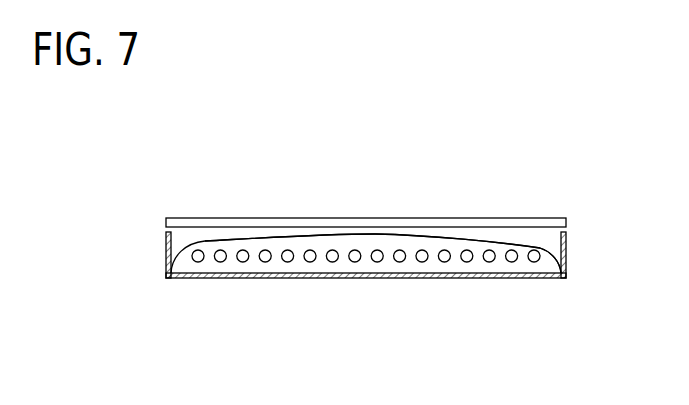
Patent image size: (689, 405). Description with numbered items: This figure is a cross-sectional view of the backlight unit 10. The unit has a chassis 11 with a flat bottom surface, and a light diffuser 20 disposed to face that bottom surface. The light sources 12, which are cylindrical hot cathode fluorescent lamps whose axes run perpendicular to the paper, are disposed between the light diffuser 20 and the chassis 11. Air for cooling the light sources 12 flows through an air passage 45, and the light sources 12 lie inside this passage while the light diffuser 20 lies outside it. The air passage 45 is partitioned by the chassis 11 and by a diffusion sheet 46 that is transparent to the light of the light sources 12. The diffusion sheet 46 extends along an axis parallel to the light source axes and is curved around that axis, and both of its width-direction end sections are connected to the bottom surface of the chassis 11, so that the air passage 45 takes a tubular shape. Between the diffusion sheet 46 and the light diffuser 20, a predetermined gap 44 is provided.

The backlight unit 10 is at (165, 188).
The chassis 11 is at (407, 278).
The light sources 12 is at (355, 249).
The light diffuser 20 is at (438, 225).
The gap 44 is at (551, 240).
The air passage 45 is at (322, 268).
The diffusion sheet 46 is at (210, 243).